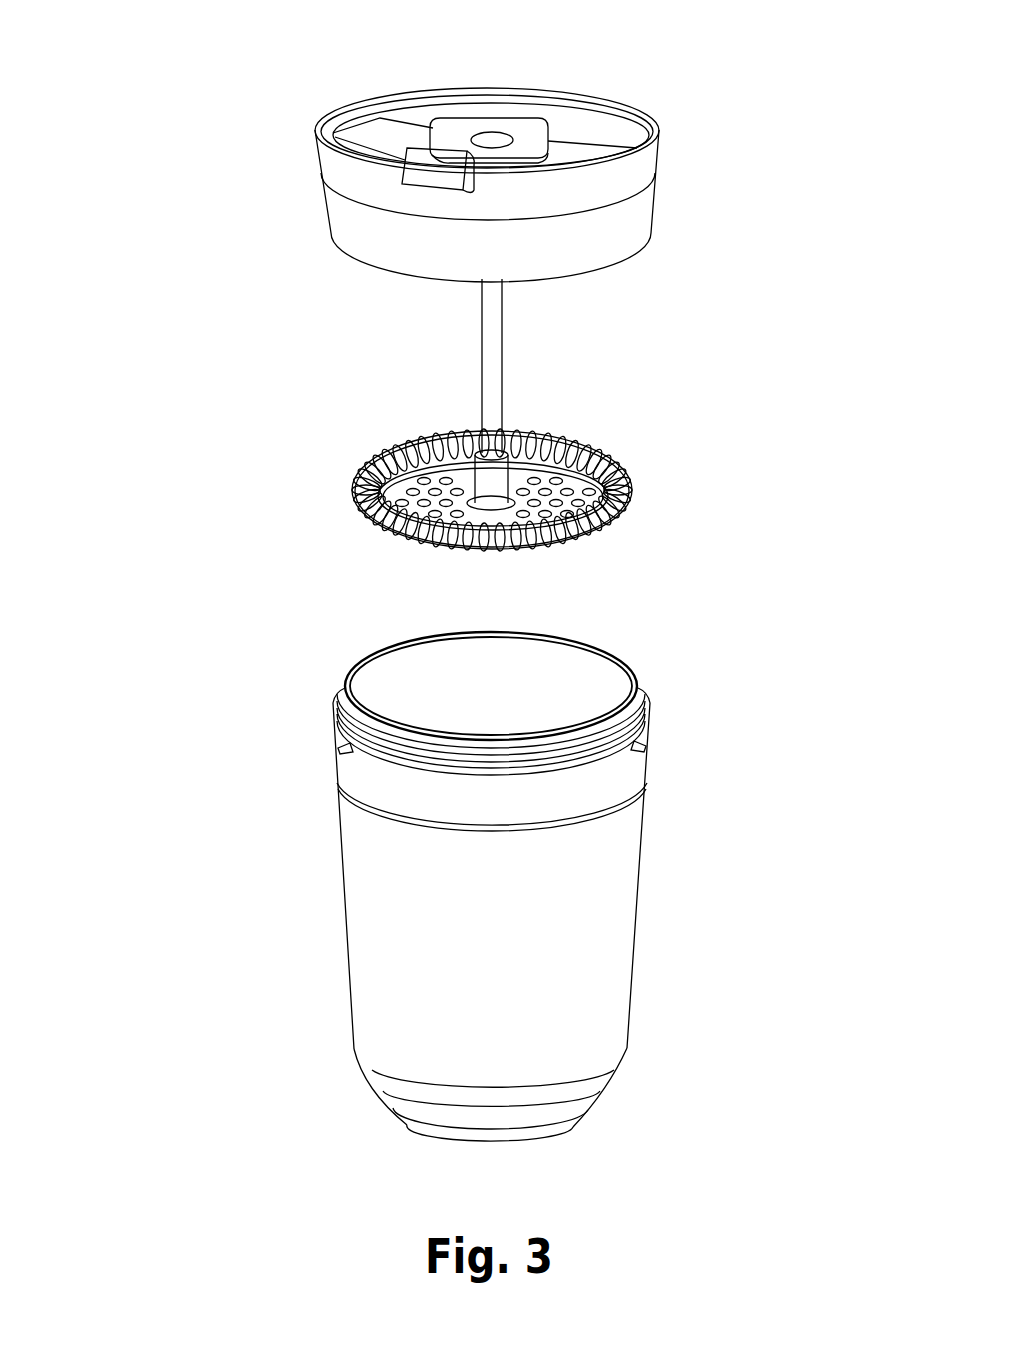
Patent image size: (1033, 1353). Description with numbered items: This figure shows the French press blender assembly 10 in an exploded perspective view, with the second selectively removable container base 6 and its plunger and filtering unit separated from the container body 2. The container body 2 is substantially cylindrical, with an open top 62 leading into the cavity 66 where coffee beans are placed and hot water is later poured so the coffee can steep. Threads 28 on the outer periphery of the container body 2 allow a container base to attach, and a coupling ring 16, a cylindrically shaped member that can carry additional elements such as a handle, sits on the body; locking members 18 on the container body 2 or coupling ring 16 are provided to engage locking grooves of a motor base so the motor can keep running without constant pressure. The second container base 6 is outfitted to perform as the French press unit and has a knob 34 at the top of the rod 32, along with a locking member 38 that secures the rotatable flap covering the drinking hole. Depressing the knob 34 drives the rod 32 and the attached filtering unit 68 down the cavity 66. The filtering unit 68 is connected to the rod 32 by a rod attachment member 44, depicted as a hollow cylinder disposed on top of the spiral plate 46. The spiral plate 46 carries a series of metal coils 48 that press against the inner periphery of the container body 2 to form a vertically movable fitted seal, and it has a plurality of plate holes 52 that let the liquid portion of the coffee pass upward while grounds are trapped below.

The French press blender assembly 10 is at (190, 280).
The second selectively removable container base 6 is at (675, 203).
The knob 34 is at (492, 140).
The locking member 38 is at (407, 177).
The rod 32 is at (480, 390).
The filtering unit 68 is at (303, 464).
The rod attachment member 44 is at (542, 465).
The spiral plate 46 is at (637, 483).
The metal coils 48 is at (623, 503).
The plate holes 52 is at (395, 463).
The container body 2 is at (640, 907).
The threads 28 is at (648, 695).
The locking members 18 is at (653, 750).
The coupling ring 16 is at (652, 763).
The open top 62 is at (433, 673).
The cavity 66 is at (540, 702).